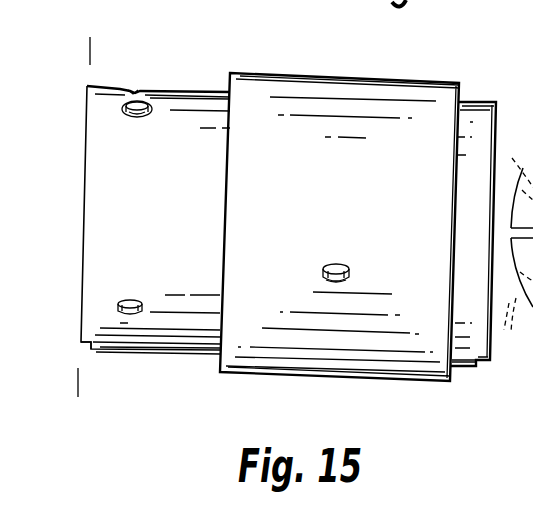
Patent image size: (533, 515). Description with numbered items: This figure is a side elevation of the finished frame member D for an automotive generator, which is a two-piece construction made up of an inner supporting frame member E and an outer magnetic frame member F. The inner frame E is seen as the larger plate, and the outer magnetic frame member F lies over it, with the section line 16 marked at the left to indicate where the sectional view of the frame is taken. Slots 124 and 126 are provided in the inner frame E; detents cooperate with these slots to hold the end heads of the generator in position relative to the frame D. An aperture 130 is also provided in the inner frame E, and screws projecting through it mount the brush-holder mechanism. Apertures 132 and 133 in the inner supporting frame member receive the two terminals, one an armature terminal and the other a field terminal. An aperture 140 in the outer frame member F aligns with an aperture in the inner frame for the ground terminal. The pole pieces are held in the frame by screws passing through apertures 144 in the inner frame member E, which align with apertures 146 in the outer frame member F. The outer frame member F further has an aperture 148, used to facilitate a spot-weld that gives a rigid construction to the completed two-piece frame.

The section line 16 is at (82, 55).
The slot 124 is at (86, 348).
The slot 126 is at (484, 366).
The aperture 130 is at (128, 301).
The aperture 132 is at (137, 118).
The aperture 133 is at (133, 92).
The aperture 140 is at (260, 77).
The aperture 144 is at (334, 265).
The aperture 146 is at (350, 275).
The aperture 148 is at (516, 253).
The inner supporting frame member E is at (193, 97).
The outer magnetic frame member F is at (344, 82).
The finished frame member D is at (478, 99).